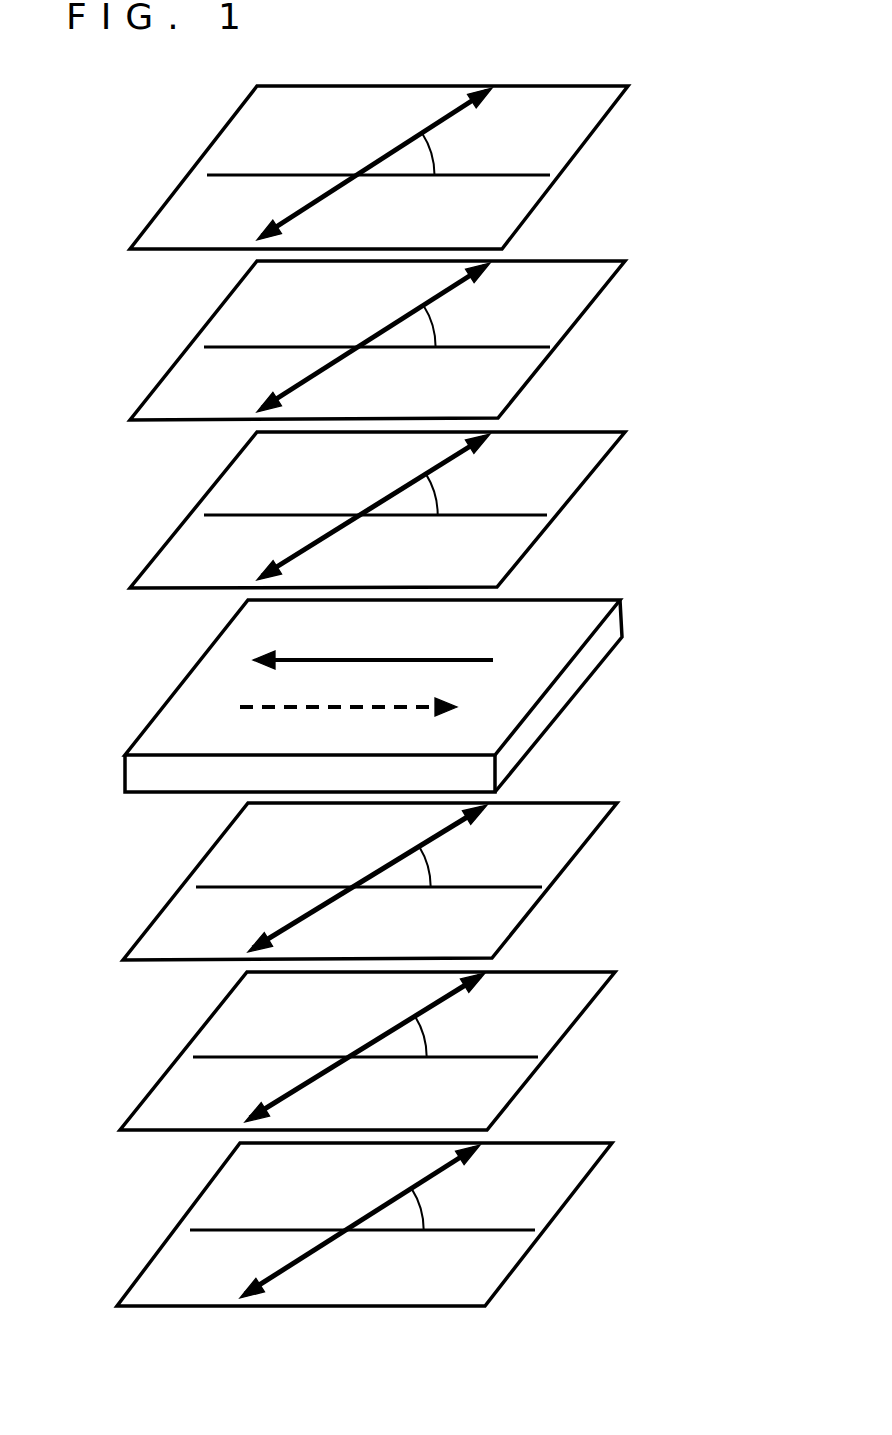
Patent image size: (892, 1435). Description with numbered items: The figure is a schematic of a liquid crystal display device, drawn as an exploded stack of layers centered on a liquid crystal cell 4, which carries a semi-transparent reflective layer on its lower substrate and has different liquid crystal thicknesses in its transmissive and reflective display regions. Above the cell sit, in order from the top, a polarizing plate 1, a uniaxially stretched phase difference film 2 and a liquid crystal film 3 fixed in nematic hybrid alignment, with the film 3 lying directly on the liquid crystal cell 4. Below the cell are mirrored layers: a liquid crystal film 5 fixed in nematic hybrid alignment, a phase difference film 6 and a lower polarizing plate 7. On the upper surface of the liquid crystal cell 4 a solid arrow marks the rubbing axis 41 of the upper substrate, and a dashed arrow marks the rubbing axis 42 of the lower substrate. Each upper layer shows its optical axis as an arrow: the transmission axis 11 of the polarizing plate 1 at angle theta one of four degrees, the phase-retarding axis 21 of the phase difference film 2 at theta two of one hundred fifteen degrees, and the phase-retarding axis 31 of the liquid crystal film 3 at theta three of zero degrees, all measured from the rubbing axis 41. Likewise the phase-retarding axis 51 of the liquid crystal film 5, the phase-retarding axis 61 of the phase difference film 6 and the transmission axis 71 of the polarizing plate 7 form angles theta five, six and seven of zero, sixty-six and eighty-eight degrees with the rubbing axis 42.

The polarizing plate 1 is at (235, 150).
The uniaxially stretched phase difference film 2 is at (233, 322).
The liquid crystal film 3 is at (232, 493).
The liquid crystal cell 4 is at (228, 648).
The liquid crystal film 5 is at (226, 863).
The phase difference film 6 is at (220, 1032).
The polarizing plate 7 is at (217, 1205).
The transmission axis 11 is at (416, 163).
The phase-retarding axis 21 is at (416, 336).
The phase-retarding axis 31 is at (415, 505).
The rubbing axis 41 is at (425, 657).
The rubbing axis 42 is at (450, 705).
The phase-retarding axis 51 is at (407, 876).
The phase-retarding axis 61 is at (405, 1046).
The transmission axis 71 is at (401, 1221).